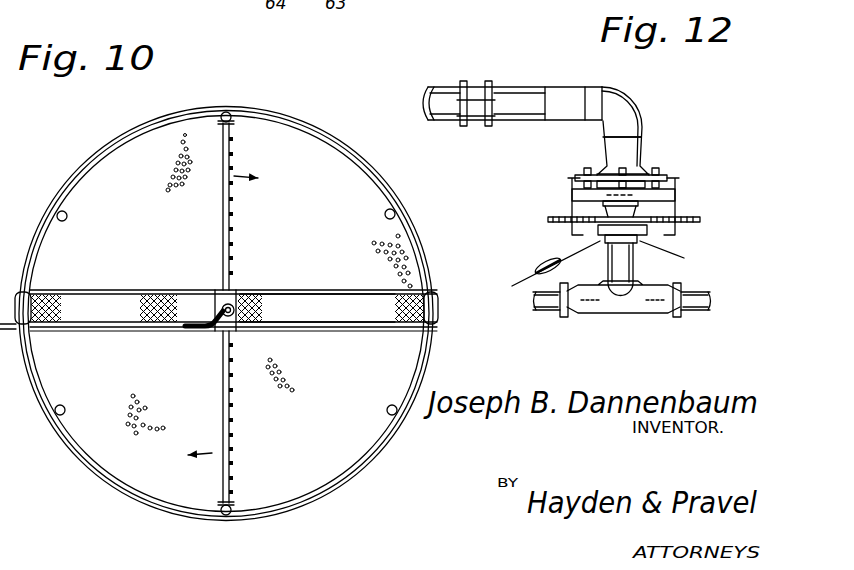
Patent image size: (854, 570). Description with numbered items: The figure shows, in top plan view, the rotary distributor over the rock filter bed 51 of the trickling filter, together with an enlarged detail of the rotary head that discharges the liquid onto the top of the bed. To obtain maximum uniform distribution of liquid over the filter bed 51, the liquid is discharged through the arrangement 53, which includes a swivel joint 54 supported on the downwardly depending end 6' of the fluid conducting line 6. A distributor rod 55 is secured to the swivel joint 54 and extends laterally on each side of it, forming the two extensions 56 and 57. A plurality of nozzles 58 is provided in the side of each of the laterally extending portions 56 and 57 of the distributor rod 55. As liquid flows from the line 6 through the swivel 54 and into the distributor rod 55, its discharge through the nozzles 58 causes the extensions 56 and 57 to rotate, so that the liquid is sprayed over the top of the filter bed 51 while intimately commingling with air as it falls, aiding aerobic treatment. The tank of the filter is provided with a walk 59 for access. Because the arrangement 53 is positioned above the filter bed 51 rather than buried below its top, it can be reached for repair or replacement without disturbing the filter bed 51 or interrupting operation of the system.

In FIG. 10, the fluid conducting line 6 is at (219, 330).
In FIG. 12, the fluid conducting line 6 is at (536, 99).
In FIG. 12, the downwardly depending end 6' is at (647, 145).
In FIG. 10, the filter bed 51 is at (321, 208).
In FIG. 12, the liquid distribution arrangement 53 is at (681, 193).
In FIG. 12, the swivel joint 54 is at (641, 204).
In FIG. 10, the distributor rod 55 is at (224, 398).
In FIG. 12, the distributor rod 55 is at (613, 310).
In FIG. 10, the laterally extending portion 56 is at (229, 239).
In FIG. 12, the laterally extending portion 56 is at (537, 313).
In FIG. 12, the laterally extending portion 57 is at (697, 313).
In FIG. 10, the nozzles 58 is at (222, 184).
In FIG. 10, the walk 59 is at (310, 294).